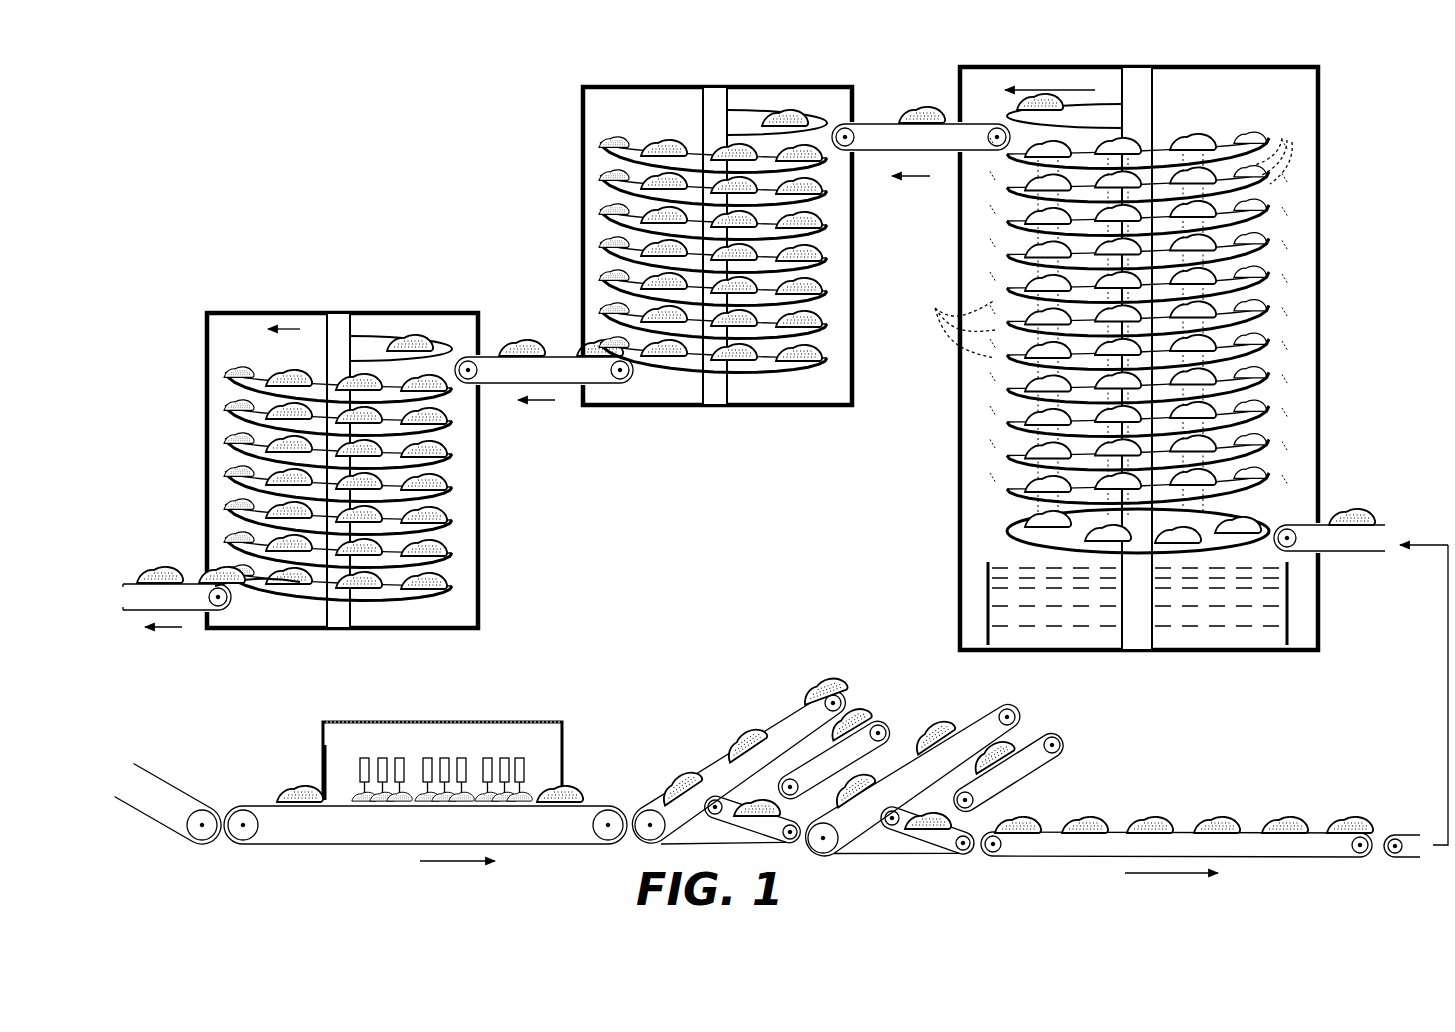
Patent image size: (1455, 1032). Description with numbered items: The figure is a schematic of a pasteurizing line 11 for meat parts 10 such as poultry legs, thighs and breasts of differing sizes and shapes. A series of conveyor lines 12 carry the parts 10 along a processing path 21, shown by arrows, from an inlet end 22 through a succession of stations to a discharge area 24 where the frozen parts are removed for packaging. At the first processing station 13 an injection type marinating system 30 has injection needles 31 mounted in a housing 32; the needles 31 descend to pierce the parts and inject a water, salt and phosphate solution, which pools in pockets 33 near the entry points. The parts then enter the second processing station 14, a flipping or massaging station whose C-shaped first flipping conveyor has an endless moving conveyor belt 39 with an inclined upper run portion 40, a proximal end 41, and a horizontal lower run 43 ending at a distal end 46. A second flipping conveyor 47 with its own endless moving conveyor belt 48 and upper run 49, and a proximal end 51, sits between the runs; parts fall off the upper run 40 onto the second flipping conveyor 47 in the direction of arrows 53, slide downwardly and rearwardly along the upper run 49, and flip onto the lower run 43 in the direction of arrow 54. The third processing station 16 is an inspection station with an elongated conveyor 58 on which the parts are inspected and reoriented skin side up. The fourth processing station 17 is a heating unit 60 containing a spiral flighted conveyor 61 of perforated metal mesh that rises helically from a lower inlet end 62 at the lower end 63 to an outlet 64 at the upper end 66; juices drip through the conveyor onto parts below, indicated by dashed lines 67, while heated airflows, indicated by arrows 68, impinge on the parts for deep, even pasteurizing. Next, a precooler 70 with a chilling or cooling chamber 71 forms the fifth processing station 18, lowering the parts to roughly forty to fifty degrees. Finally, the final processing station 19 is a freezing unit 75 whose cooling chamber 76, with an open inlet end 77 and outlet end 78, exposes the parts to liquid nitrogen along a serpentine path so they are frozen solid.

The parts 10 is at (155, 576).
The pasteurizing line 11 is at (425, 852).
The conveyor line 12 is at (572, 846).
The first processing station 13 is at (425, 710).
The second processing station 14 is at (851, 719).
The third processing station 16 is at (1200, 831).
The fourth processing station 17 is at (1125, 358).
The fifth processing station 18 is at (715, 425).
The final processing station 19 is at (500, 605).
The processing path 21 is at (182, 628).
The inlet end 22 is at (250, 848).
The discharge area 24 is at (125, 620).
The injection type marinating system 30 is at (395, 786).
The injection needles 31 is at (401, 757).
The housing 32 is at (321, 748).
The pockets 33 is at (397, 800).
The endless moving conveyor belt 39 is at (716, 743).
The inclined upper run portion 40 is at (787, 710).
The proximal end 41 is at (636, 808).
The lower run 43 is at (923, 830).
The distal end 46 is at (990, 858).
The second flipping conveyor 47 is at (897, 724).
The endless moving conveyor belt 48 is at (862, 720).
The upper run 49 is at (814, 746).
The proximal end 51 is at (1058, 752).
The arrows 53 is at (1036, 743).
The arrow 54 is at (745, 767).
The elongated conveyor 58 is at (1302, 848).
The heating unit 60 is at (1150, 346).
The spiral flighted conveyor 61 is at (1265, 290).
The lower inlet end 62 is at (1300, 525).
The lower end 63 is at (1320, 583).
The outlet 64 is at (957, 135).
The upper end 66 is at (1310, 70).
The dashed lines 67 is at (1284, 148).
The arrows 68 is at (957, 320).
The precooler 70 is at (711, 260).
The chilling or cooling chamber 71 is at (815, 100).
The freezing unit 75 is at (366, 443).
The cooling chamber 76 is at (416, 322).
The inlet end 77 is at (476, 355).
The outlet end 78 is at (215, 583).